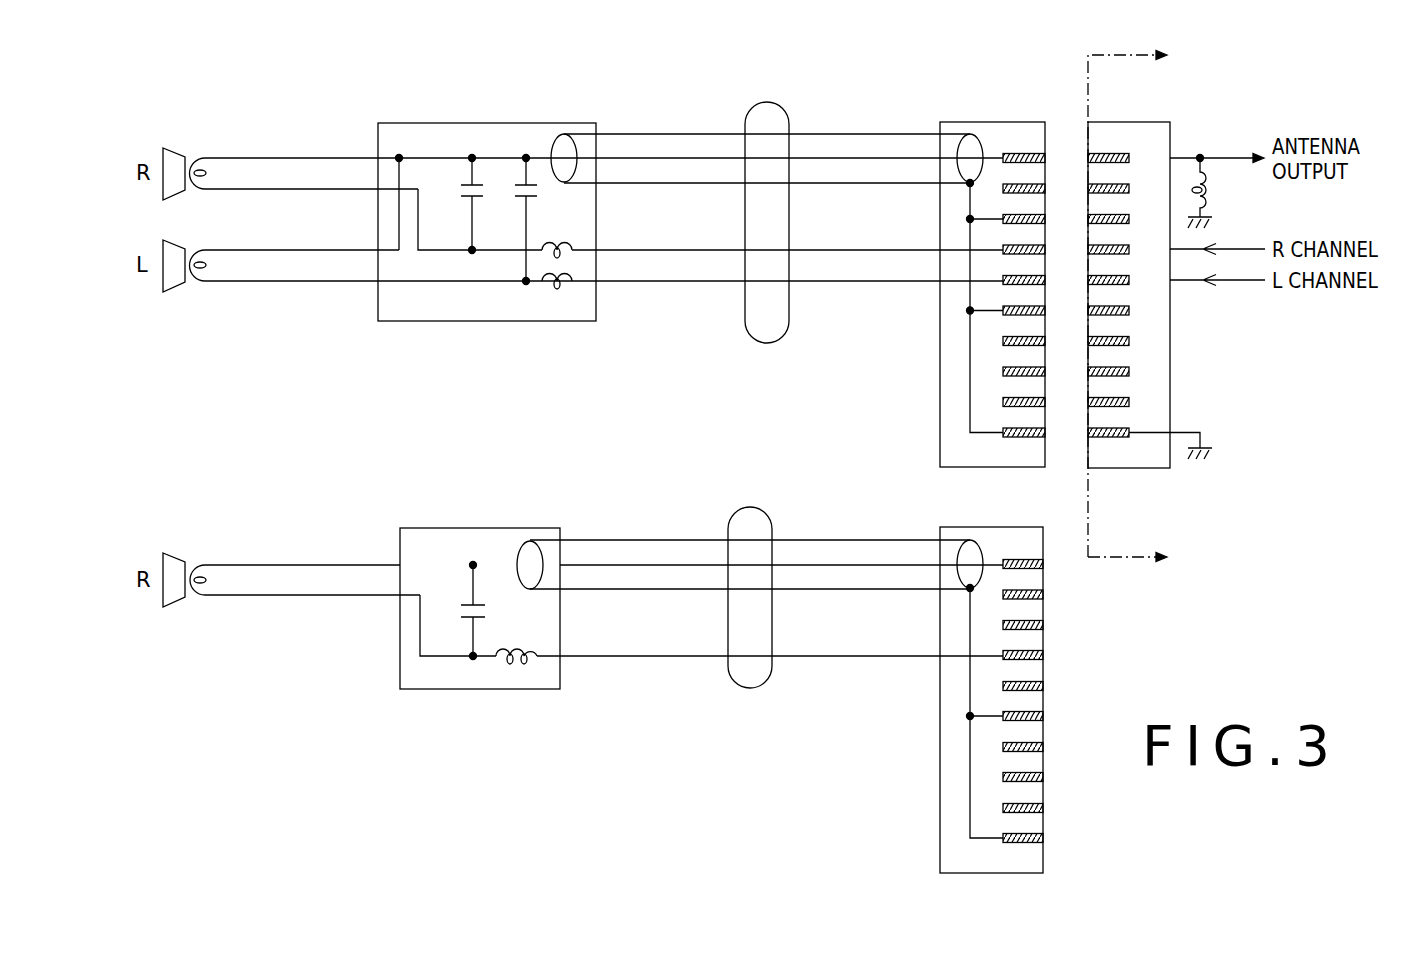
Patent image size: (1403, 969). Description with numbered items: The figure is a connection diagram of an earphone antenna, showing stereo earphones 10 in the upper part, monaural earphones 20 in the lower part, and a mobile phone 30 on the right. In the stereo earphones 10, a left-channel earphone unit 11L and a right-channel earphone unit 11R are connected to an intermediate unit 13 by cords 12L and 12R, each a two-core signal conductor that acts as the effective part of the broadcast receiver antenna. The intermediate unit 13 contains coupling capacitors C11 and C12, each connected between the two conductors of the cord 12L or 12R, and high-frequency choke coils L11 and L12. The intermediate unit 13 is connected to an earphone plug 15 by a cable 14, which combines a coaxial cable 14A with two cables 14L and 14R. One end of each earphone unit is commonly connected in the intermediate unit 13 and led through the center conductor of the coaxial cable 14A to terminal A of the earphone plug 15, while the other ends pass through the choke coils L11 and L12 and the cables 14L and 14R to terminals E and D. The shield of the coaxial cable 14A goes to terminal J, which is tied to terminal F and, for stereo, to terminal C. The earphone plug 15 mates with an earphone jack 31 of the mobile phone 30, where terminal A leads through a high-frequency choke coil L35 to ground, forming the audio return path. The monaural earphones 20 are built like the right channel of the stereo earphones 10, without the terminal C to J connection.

The stereo earphones 10 is at (412, 371).
The monaural earphones 20 is at (433, 741).
The right-channel earphone unit 11R is at (178, 200).
The left-channel earphone unit 11L is at (175, 292).
The cord 12R is at (252, 172).
The cord 12L is at (245, 263).
The intermediate unit 13 is at (456, 123).
The coupling capacitor C12 is at (455, 407).
The coupling capacitor C11 is at (508, 220).
The high-frequency choke coil L12 is at (538, 438).
The high-frequency choke coil L11 is at (561, 294).
The cable 14 is at (765, 102).
The coaxial cable 14A is at (668, 134).
The cable 14R is at (672, 250).
The cable 14L is at (863, 280).
The earphone plug 15 is at (940, 418).
The mobile phone 30 is at (1108, 55).
The earphone jack 31 is at (1108, 122).
The high-frequency choke coil L35 is at (1221, 192).